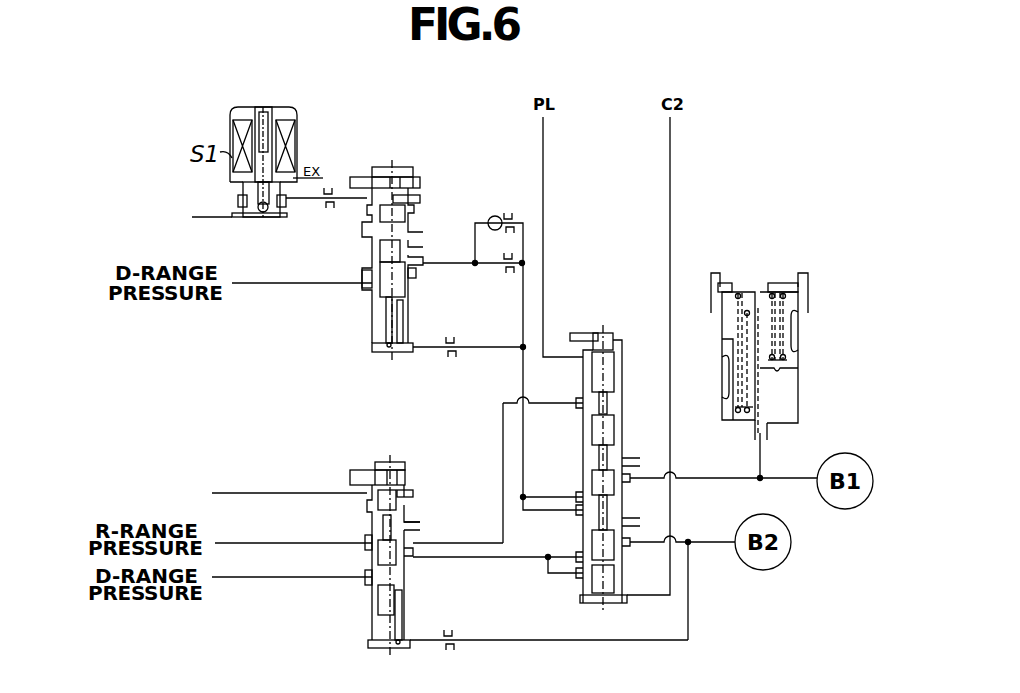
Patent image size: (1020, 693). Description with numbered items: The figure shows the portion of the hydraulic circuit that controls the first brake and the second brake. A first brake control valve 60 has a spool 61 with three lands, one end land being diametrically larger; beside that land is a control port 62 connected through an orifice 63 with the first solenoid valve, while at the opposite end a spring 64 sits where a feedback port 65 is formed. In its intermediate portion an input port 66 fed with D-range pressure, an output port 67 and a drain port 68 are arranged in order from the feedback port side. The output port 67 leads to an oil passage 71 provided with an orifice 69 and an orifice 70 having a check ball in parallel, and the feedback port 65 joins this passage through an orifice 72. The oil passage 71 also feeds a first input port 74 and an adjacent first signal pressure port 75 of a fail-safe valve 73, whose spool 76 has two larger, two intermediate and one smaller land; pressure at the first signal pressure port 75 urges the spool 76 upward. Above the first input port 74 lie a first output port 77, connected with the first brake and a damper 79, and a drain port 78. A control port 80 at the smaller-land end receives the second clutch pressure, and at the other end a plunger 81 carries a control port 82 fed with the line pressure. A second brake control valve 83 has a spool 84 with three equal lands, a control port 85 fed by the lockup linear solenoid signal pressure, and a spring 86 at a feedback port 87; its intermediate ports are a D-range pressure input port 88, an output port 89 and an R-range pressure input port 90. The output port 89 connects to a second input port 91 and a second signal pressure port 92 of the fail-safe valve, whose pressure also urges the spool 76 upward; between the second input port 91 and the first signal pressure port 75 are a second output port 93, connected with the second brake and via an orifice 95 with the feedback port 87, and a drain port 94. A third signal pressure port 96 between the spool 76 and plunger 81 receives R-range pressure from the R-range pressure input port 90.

The first brake control valve 60 is at (412, 147).
The spool 61 is at (380, 302).
The control port 62 is at (367, 193).
The orifice 63 is at (328, 205).
The spring 64 is at (390, 352).
The feedback port 65 is at (405, 355).
The input port 66 is at (372, 280).
The output port 67 is at (413, 272).
The drain port 68 is at (420, 264).
The orifice 69 is at (516, 262).
The orifice having a check ball 70 is at (505, 215).
The oil passage 71 is at (526, 286).
The orifice 72 is at (456, 350).
The fail-safe valve 73 is at (608, 325).
The first input port 74 is at (577, 492).
The first signal pressure port 75 is at (577, 508).
The spool 76 is at (626, 438).
The first output port 77 is at (669, 477).
The drain port 78 is at (624, 462).
The damper 79 is at (800, 350).
The control port 80 is at (618, 600).
The plunger 81 is at (610, 368).
The control port 82 is at (585, 345).
The second brake control valve 83 is at (345, 612).
The spool 84 is at (372, 596).
The control port 85 is at (365, 487).
The spring 86 is at (407, 630).
The feedback port 87 is at (415, 642).
The D-range pressure input port 88 is at (367, 578).
The output port 89 is at (412, 553).
The R-range pressure input port 90 is at (367, 540).
The second input port 91 is at (583, 556).
The second signal pressure port 92 is at (583, 575).
The second output port 93 is at (623, 545).
The drain port 94 is at (623, 525).
The orifice 95 is at (455, 645).
The third signal pressure port 96 is at (578, 397).